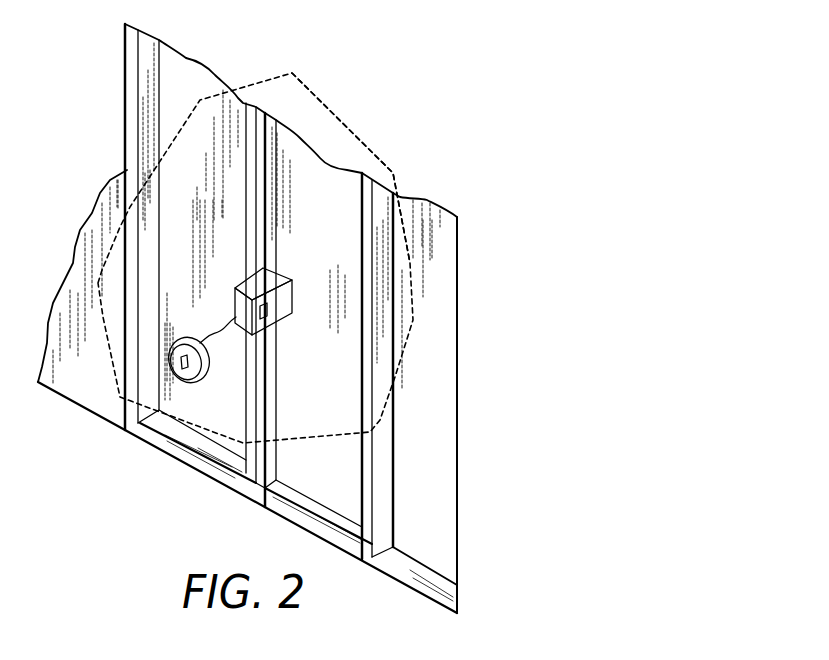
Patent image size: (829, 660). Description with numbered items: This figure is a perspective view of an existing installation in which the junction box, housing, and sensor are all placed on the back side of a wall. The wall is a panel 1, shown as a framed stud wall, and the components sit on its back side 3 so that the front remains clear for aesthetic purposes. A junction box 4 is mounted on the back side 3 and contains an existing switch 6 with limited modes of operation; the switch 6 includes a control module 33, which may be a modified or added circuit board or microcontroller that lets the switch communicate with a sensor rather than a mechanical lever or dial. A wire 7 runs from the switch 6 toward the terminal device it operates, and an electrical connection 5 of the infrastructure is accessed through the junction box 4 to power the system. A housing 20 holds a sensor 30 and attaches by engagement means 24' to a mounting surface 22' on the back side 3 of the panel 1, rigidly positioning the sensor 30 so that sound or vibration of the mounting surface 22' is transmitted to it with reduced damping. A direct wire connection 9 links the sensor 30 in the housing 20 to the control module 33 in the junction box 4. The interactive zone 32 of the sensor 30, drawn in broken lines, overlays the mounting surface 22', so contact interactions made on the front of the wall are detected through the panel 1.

The panel 1 is at (125, 168).
The back side 3 is at (180, 152).
The wire 7 is at (265, 162).
The junction box 4 is at (270, 278).
The switch 6 is at (242, 305).
The direct wire connection 9 is at (222, 328).
The electrical connection 5 is at (248, 317).
The control module 33 is at (268, 317).
The engagement means 24' is at (265, 300).
The mounting surface 22' is at (255, 258).
The interactive zone 32 is at (370, 148).
The housing 20 is at (177, 362).
The sensor 30 is at (185, 373).